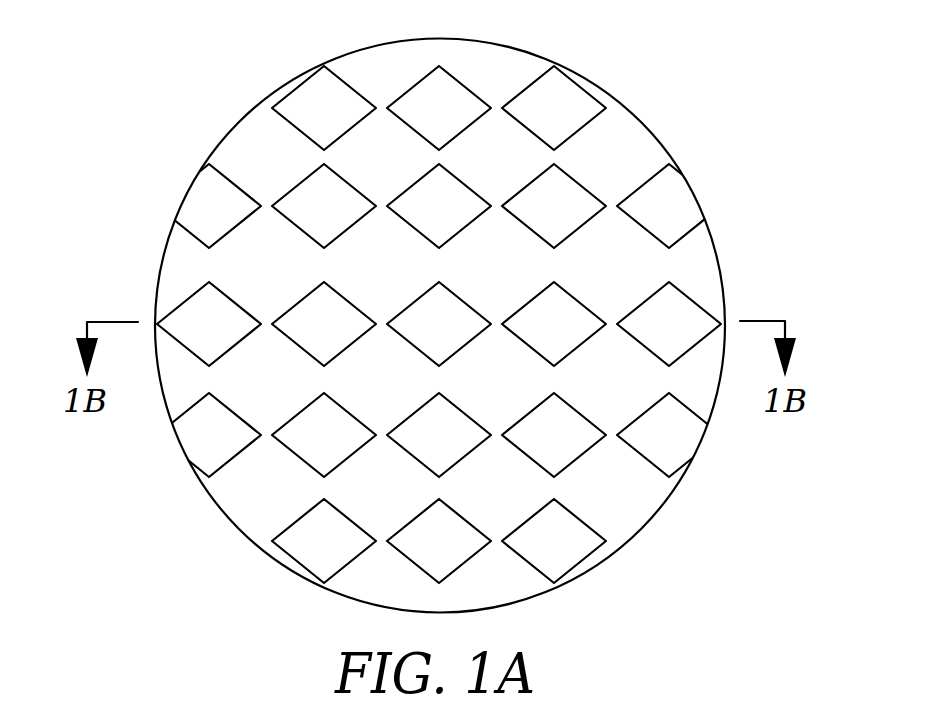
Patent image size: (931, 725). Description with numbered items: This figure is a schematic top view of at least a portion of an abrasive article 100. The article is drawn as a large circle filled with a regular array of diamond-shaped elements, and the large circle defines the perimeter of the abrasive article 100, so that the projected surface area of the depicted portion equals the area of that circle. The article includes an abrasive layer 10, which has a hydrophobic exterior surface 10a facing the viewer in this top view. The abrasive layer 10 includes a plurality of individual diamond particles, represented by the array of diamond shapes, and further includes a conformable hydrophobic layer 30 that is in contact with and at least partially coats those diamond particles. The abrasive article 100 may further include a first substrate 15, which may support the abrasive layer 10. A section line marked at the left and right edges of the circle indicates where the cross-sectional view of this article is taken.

The abrasive article 100 is at (454, 306).
The abrasive layer 10 is at (455, 312).
The hydrophobic exterior surface 10a is at (455, 326).
The first substrate 15 is at (667, 153).
The conformable hydrophobic layer 30 is at (202, 202).